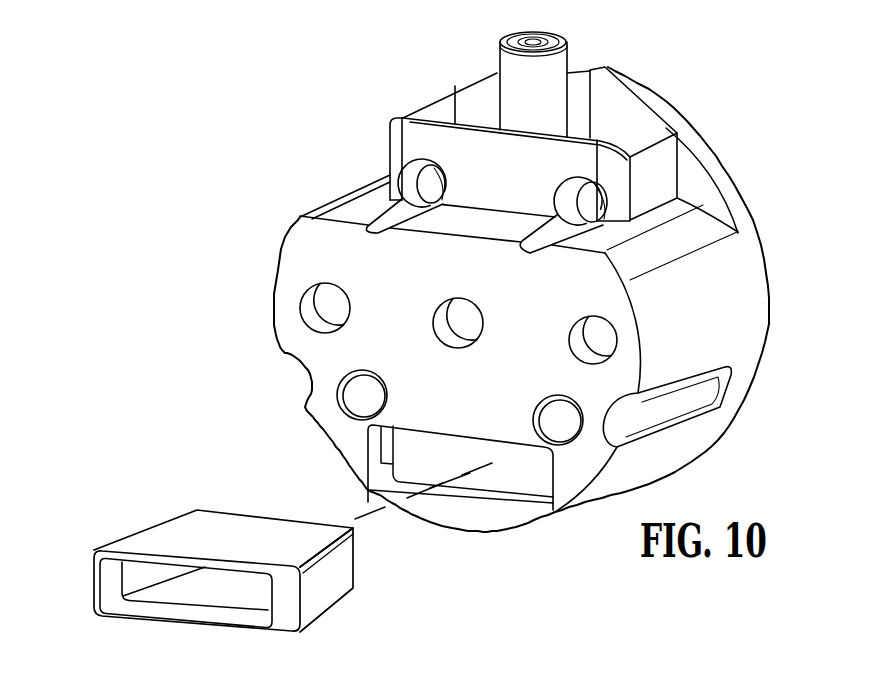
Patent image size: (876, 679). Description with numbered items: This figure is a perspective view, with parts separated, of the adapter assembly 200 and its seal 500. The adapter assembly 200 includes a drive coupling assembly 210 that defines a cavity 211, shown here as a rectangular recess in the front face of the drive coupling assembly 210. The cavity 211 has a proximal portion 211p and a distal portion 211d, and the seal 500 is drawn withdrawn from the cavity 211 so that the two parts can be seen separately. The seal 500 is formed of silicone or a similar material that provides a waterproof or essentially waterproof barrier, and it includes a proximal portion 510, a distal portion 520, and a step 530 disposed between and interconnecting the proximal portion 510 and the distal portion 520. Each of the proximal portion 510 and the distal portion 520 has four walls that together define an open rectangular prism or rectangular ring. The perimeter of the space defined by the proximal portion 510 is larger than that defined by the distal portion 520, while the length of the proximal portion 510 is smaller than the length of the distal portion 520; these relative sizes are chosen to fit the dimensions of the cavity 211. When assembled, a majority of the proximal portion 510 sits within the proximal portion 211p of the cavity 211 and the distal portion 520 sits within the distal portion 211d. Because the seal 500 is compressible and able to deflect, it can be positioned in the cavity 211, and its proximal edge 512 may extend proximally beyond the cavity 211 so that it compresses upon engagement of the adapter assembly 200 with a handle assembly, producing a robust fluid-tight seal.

The adapter assembly 200 is at (454, 68).
The drive coupling assembly 210 is at (583, 292).
The cavity 211 is at (541, 473).
The distal portion of cavity 211d is at (507, 467).
The proximal portion of cavity 211p is at (524, 507).
The seal 500 is at (134, 481).
The proximal portion 510 is at (107, 575).
The proximal edge 512 is at (93, 552).
The distal portion 520 is at (218, 523).
The step 530 is at (232, 610).